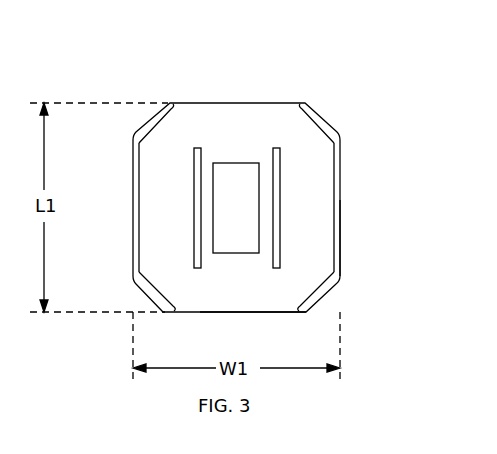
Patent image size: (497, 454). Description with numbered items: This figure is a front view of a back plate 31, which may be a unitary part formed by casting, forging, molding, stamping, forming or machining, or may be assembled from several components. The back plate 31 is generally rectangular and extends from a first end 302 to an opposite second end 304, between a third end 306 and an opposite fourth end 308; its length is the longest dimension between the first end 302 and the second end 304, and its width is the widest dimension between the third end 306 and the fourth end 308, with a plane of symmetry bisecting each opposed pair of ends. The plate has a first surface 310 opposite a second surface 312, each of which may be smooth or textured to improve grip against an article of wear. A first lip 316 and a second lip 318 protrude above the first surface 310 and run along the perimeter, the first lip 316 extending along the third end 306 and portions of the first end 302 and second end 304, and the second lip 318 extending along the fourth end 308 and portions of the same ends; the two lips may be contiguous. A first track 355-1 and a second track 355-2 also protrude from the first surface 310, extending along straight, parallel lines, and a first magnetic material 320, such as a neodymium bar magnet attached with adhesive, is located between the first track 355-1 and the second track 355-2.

The back plate 31 is at (90, 58).
The first end 302 is at (200, 103).
The second end 304 is at (278, 313).
The third end 306 is at (130, 150).
The fourth end 308 is at (342, 272).
The first surface 310 is at (255, 143).
The second surface 312 is at (294, 90).
The first lip 316 is at (121, 251).
The second lip 318 is at (352, 154).
The first magnetic material 320 is at (255, 196).
The first track 355-1 is at (194, 260).
The second track 355-2 is at (280, 260).